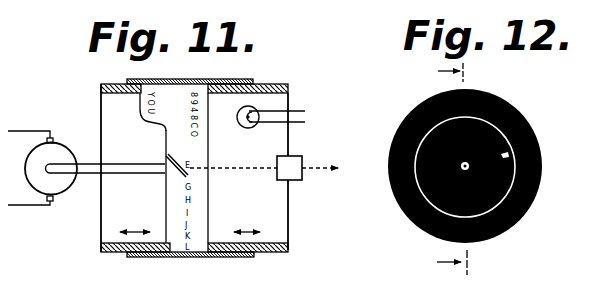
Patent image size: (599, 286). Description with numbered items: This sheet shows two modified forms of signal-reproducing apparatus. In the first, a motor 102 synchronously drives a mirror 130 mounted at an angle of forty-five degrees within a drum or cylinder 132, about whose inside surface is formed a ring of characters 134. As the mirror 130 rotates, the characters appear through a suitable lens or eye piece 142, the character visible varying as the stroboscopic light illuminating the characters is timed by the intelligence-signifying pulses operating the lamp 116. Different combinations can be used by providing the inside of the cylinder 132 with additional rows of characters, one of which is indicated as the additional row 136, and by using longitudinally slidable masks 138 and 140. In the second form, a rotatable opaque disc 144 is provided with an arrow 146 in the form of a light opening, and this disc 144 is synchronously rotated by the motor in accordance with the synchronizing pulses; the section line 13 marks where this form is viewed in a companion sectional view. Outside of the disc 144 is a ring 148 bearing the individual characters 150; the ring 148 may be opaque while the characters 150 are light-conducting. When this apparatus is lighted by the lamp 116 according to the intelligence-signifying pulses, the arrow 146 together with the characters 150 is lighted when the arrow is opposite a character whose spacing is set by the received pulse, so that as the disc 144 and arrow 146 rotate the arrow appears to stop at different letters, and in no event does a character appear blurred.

In FIG. 11, the motor 102 is at (63, 192).
In FIG. 11, the lamp 116 is at (247, 128).
In FIG. 11, the mirror 130 is at (165, 166).
In FIG. 11, the drum or cylinder 132 is at (210, 84).
In FIG. 11, the ring of characters 134 is at (186, 83).
In FIG. 11, the additional row of characters 136 is at (148, 88).
In FIG. 11, the longitudinally slidable mask 138 is at (270, 254).
In FIG. 11, the longitudinally slidable mask 140 is at (108, 258).
In FIG. 11, the lens or eye piece 142 is at (296, 156).
In FIG. 12, the section line 13 is at (462, 169).
In FIG. 12, the rotatable opaque disc 144 is at (513, 183).
In FIG. 12, the arrow 146 is at (513, 157).
In FIG. 12, the ring 148 is at (517, 108).
In FIG. 12, the individual characters 150 is at (512, 108).